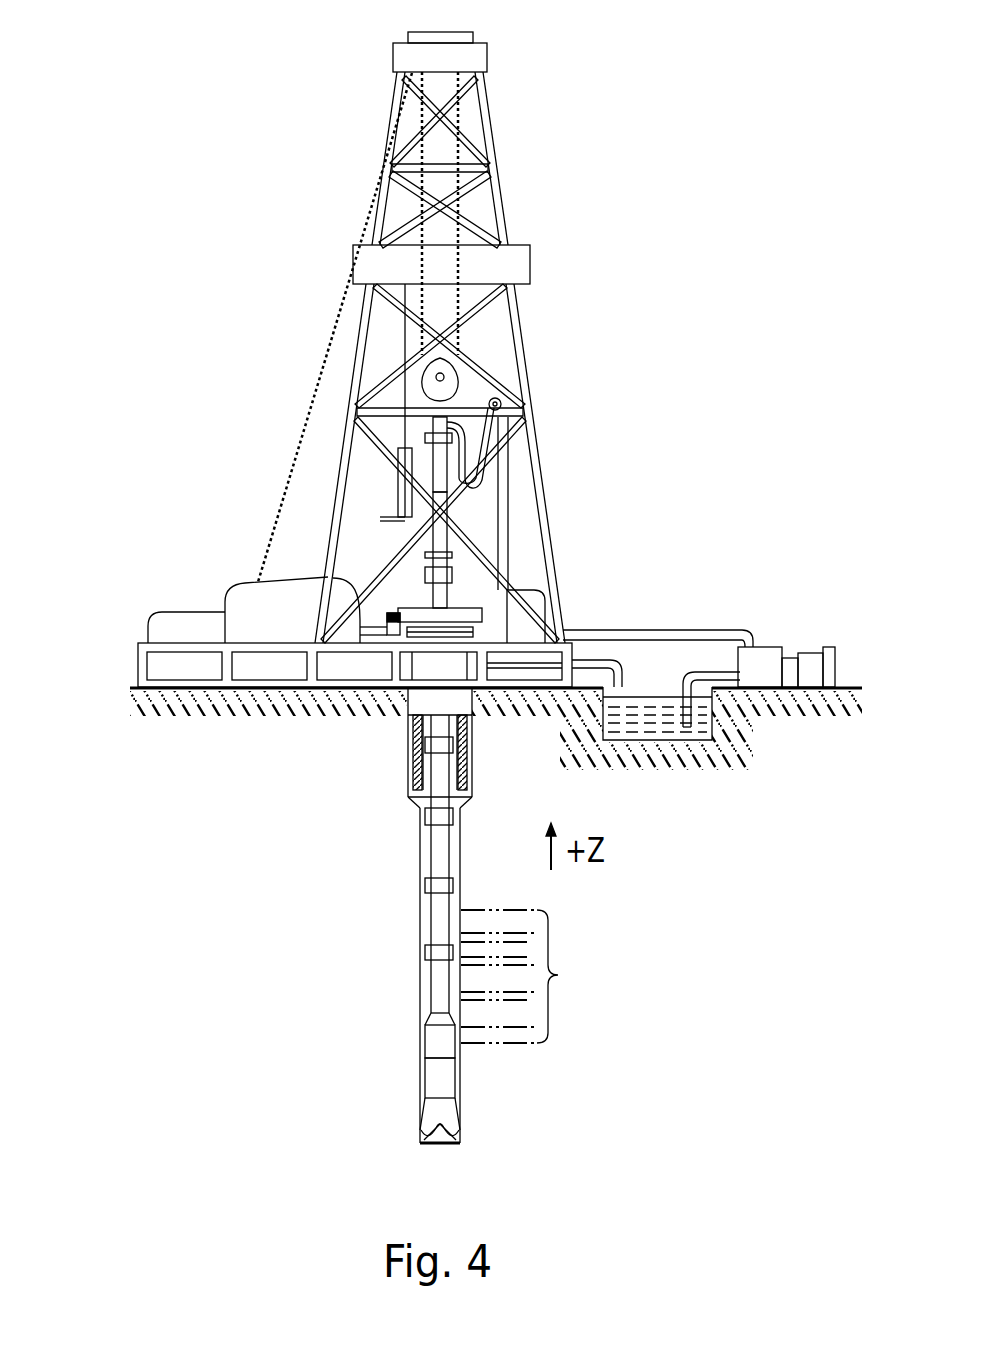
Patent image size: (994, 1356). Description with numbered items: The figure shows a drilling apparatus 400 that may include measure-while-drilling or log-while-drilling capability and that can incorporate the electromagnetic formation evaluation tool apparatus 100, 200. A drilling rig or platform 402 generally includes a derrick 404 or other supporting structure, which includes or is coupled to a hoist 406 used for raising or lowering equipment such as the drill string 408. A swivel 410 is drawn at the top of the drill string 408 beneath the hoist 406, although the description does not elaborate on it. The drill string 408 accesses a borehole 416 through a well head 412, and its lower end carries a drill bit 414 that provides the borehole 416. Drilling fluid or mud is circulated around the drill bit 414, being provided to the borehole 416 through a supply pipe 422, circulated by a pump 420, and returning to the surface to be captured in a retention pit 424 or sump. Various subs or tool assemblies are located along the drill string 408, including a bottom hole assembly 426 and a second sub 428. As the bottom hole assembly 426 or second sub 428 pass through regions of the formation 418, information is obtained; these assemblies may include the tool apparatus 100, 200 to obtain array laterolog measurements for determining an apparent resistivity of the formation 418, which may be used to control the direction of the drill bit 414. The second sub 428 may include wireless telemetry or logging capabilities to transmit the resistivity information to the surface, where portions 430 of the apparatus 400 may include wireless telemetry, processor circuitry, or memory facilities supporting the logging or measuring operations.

The drilling apparatus 400 is at (205, 101).
The drilling rig or platform 402 is at (138, 666).
The derrick 404 is at (500, 200).
The hoist 406 is at (447, 392).
The drill string 408 is at (447, 833).
The swivel 410 is at (440, 462).
The well head 412 is at (473, 600).
The drill bit 414 is at (455, 1128).
The borehole 416 is at (458, 867).
The formation 418 is at (536, 976).
The pump 420 is at (770, 647).
The supply pipe 422 is at (692, 630).
The retention pit 424 is at (648, 720).
The bottom hole assembly 426 is at (425, 1108).
The second sub 428 is at (427, 1040).
The portions of the apparatus at the surface 430 is at (440, 517).
The electromagnetic formation evaluation tool apparatus 100 is at (552, 1075).
The electromagnetic formation evaluation tool apparatus 200 is at (440, 1080).